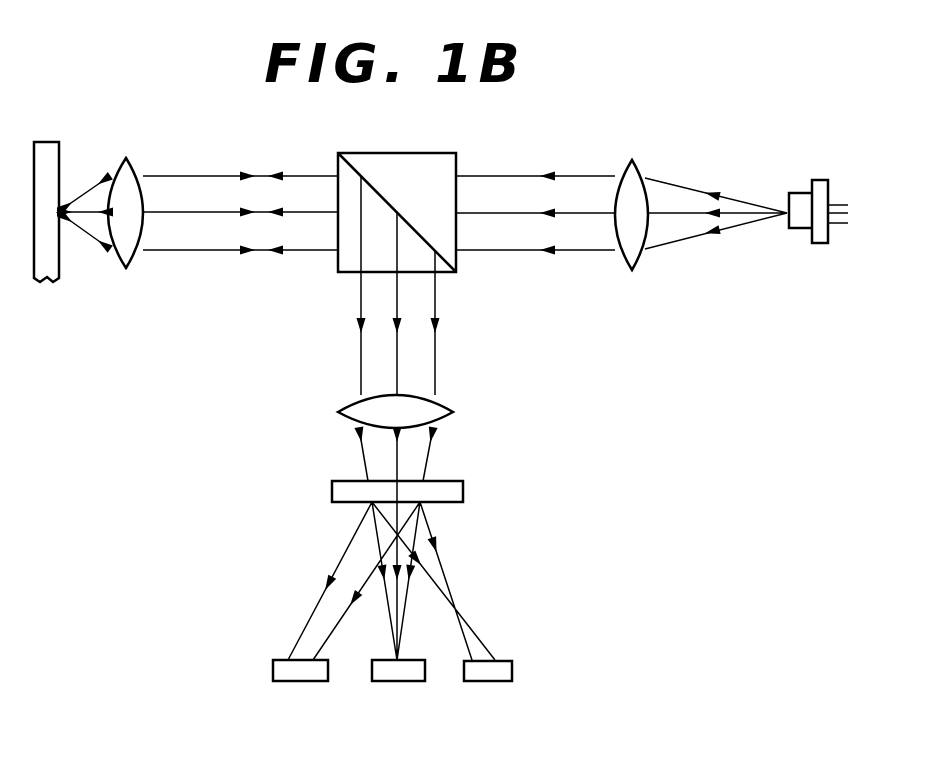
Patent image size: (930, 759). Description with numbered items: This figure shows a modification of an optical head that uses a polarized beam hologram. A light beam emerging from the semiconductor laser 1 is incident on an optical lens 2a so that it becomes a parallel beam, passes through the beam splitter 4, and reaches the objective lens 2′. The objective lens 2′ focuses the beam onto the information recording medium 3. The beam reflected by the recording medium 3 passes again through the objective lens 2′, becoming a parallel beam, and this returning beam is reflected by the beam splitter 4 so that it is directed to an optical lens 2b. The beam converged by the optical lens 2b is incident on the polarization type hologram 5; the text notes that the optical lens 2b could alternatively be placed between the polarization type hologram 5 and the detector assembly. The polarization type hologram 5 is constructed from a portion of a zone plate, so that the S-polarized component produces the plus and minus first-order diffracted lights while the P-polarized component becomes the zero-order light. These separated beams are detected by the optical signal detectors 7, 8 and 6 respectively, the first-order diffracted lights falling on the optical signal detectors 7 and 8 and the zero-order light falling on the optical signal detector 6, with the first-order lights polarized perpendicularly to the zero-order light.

The semiconductor laser 1 is at (800, 193).
The optical lens 2a is at (636, 160).
The objective lens 2′ is at (128, 158).
The optical lens 2b is at (442, 406).
The information recording medium 3 is at (47, 142).
The beam splitter 4 is at (443, 158).
The polarization type hologram 5 is at (465, 490).
The optical signal detector 6 is at (407, 681).
The optical signal detector 7 is at (315, 681).
The optical signal detector 8 is at (503, 681).